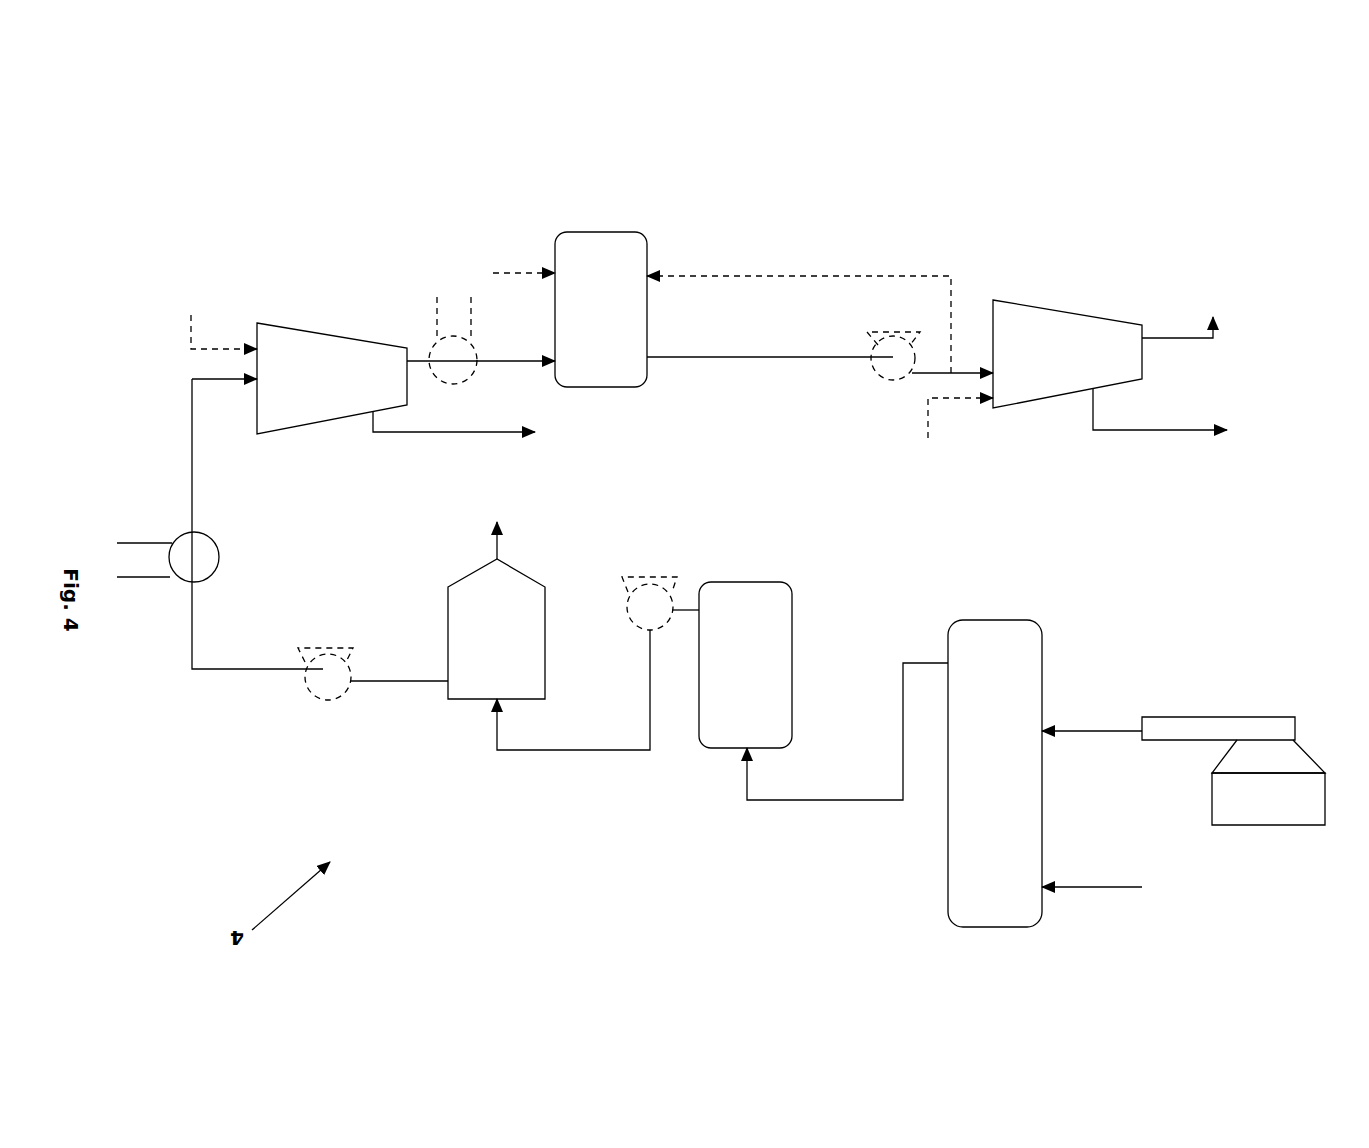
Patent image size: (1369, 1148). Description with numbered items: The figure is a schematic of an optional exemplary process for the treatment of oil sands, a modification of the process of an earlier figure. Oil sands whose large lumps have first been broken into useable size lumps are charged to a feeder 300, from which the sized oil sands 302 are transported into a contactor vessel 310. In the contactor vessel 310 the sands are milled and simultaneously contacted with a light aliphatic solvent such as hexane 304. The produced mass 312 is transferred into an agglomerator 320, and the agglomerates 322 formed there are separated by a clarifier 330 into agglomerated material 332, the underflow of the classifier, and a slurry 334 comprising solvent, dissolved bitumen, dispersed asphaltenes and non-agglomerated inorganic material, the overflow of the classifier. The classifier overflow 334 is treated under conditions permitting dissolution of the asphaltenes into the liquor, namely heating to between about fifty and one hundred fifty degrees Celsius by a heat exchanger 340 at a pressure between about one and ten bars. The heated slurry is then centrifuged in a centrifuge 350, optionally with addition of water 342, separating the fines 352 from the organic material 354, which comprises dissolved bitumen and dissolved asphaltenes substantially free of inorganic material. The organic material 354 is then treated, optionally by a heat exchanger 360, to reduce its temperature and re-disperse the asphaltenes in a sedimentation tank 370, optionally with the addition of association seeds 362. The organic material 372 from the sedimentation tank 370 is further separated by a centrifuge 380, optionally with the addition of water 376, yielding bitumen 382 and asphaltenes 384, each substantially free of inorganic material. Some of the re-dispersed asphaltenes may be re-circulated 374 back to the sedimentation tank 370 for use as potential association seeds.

The feeder 300 is at (1285, 825).
The sized oil sands 302 is at (1092, 744).
The light aliphatic solvent such as hexane 304 is at (1092, 902).
The contactor vessel 310 is at (990, 927).
The produced mass 312 is at (847, 741).
The agglomerator 320 is at (790, 628).
The agglomerates 322 is at (573, 702).
The clarifier 330 is at (540, 642).
The agglomerated material 332 is at (519, 540).
The slurry 334 is at (399, 692).
The heat exchanger 340 is at (218, 568).
The water 342 is at (203, 332).
The centrifuge 350 is at (330, 335).
The fines 352 is at (454, 433).
The organic material 354 is at (481, 368).
The heat exchanger 360 is at (435, 347).
The association seeds 362 is at (524, 284).
The sedimentation tank 370 is at (608, 232).
The organic material 372 is at (770, 367).
The re-circulated asphaltenes 374 is at (799, 324).
The water 376 is at (941, 427).
The centrifuge 380 is at (1018, 300).
The bitumen 382 is at (1160, 422).
The asphaltenes 384 is at (1187, 314).